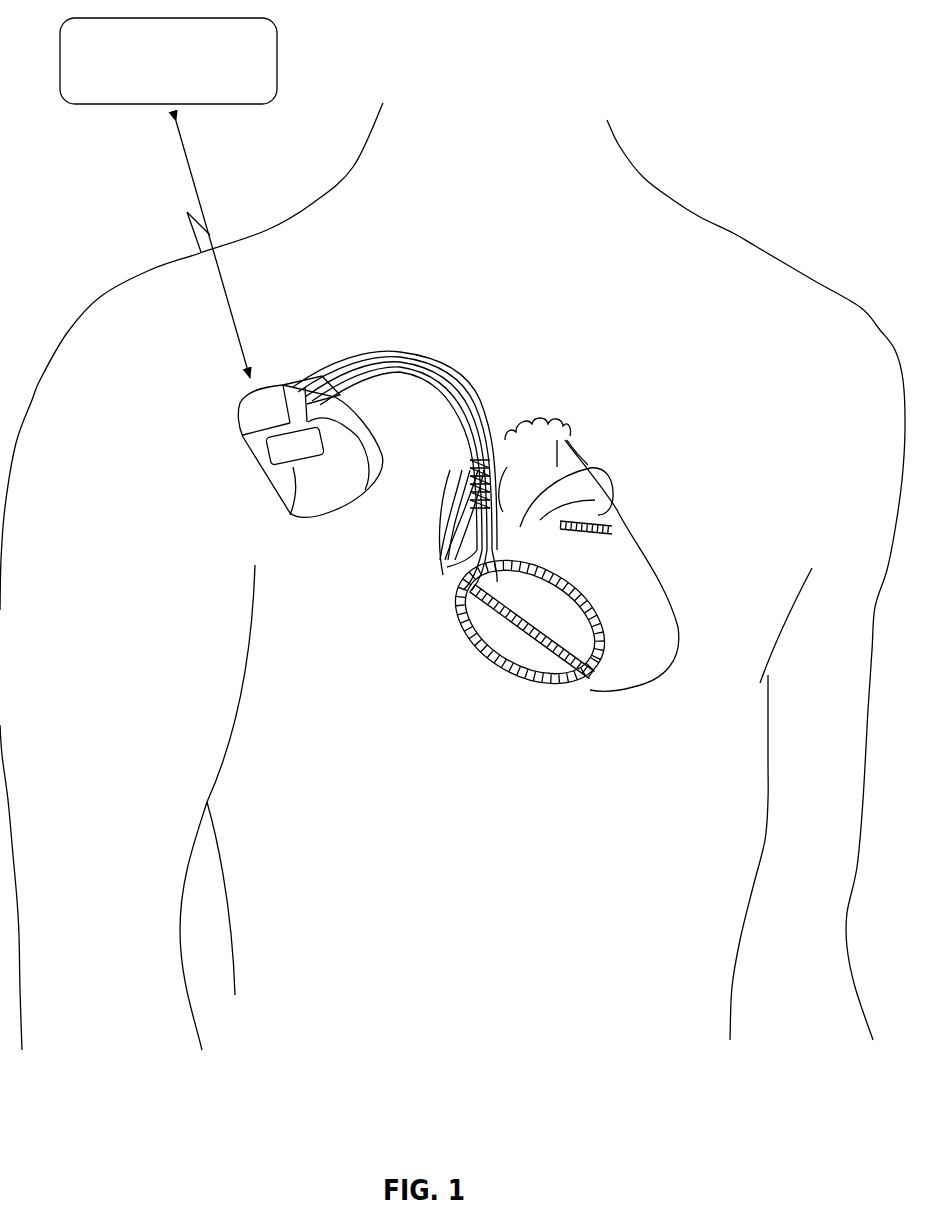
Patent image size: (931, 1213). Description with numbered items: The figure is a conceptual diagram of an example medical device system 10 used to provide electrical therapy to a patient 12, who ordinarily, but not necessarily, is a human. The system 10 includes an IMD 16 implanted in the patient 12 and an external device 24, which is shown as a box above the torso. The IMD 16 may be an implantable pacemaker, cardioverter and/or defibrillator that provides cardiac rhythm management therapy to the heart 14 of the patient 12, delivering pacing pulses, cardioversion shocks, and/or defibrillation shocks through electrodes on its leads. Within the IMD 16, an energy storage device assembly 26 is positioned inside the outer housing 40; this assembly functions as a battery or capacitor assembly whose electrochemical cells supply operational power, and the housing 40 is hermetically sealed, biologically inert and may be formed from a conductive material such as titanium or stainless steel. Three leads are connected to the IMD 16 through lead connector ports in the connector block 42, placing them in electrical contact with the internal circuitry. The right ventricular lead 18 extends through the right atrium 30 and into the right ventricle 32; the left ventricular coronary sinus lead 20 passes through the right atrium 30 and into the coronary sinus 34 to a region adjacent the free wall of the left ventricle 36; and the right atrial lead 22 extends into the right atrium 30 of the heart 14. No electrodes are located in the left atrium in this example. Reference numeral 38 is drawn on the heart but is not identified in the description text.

The medical device system 10 is at (725, 88).
The patient 12 is at (733, 237).
The heart 14 is at (554, 592).
The IMD 16 is at (283, 457).
The right ventricular lead 18 is at (437, 372).
The left ventricular coronary sinus lead 20 is at (503, 407).
The right atrial lead 22 is at (463, 410).
The external device 24 is at (179, 88).
The energy storage device assembly 26 is at (290, 505).
The right atrium 30 is at (447, 568).
The right ventricle 32 is at (500, 667).
The coronary sinus 34 is at (506, 508).
The left ventricle 36 is at (650, 608).
The aorta 38 is at (567, 436).
The outer housing 40 is at (325, 503).
The connector block 42 is at (240, 420).